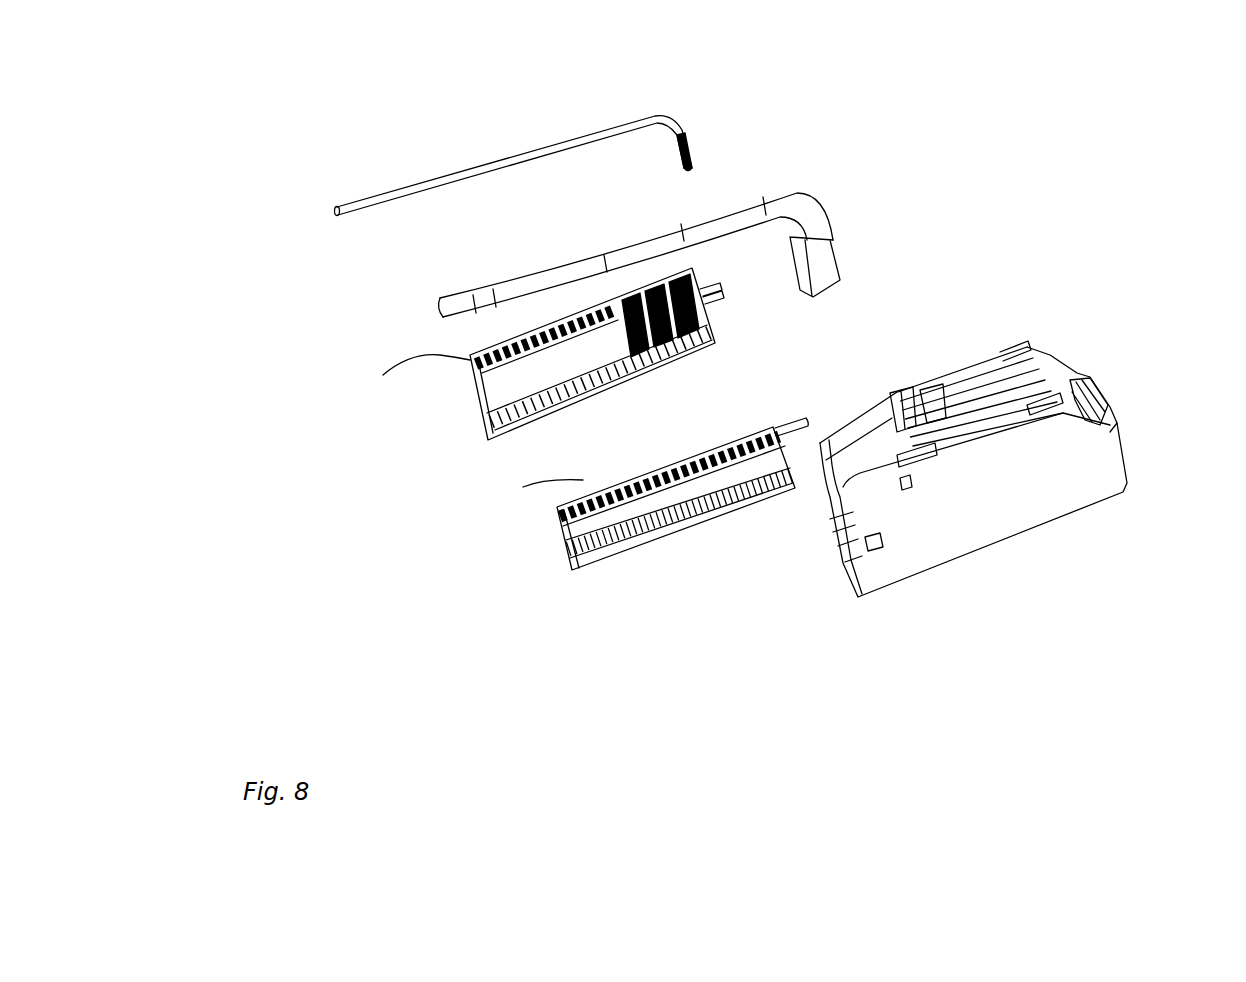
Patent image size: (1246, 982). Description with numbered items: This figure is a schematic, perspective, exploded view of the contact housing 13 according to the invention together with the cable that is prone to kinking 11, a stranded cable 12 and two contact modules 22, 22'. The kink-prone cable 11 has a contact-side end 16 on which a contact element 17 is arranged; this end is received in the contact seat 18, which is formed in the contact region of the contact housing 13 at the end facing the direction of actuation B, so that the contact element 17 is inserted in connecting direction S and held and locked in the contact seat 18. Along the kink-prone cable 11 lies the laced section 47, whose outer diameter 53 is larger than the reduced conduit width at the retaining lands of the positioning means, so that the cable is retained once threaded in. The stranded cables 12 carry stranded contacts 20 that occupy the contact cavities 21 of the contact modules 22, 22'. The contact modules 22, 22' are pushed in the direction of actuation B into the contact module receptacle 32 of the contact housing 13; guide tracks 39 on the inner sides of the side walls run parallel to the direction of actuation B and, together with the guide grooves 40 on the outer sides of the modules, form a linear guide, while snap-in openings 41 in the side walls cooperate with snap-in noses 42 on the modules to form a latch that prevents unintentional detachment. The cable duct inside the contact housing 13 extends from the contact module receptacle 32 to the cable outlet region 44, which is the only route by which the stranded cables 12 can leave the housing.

The stranded cable 12 is at (682, 84).
The stranded contact 20 is at (694, 136).
The cable that is prone to kinking 11 is at (828, 178).
The laced section 47 is at (742, 190).
The outer diameter 53 is at (773, 225).
The contact element 17 is at (827, 257).
The contact-side end 16 is at (855, 267).
The contact housing 13 is at (953, 488).
The contact seat 18 is at (1077, 373).
The cable outlet region 44 is at (843, 455).
The snap-in opening 41 is at (877, 547).
The contact module receptacle 32 is at (818, 553).
The guide track 39 is at (818, 523).
The contact cavity 21 is at (438, 407).
The contact module 22 is at (533, 388).
The contact module 22' is at (616, 527).
The snap-in nose 42 is at (578, 535).
The guide groove 40 is at (541, 595).
The connecting direction S is at (258, 305).
The direction of actuation B is at (683, 586).